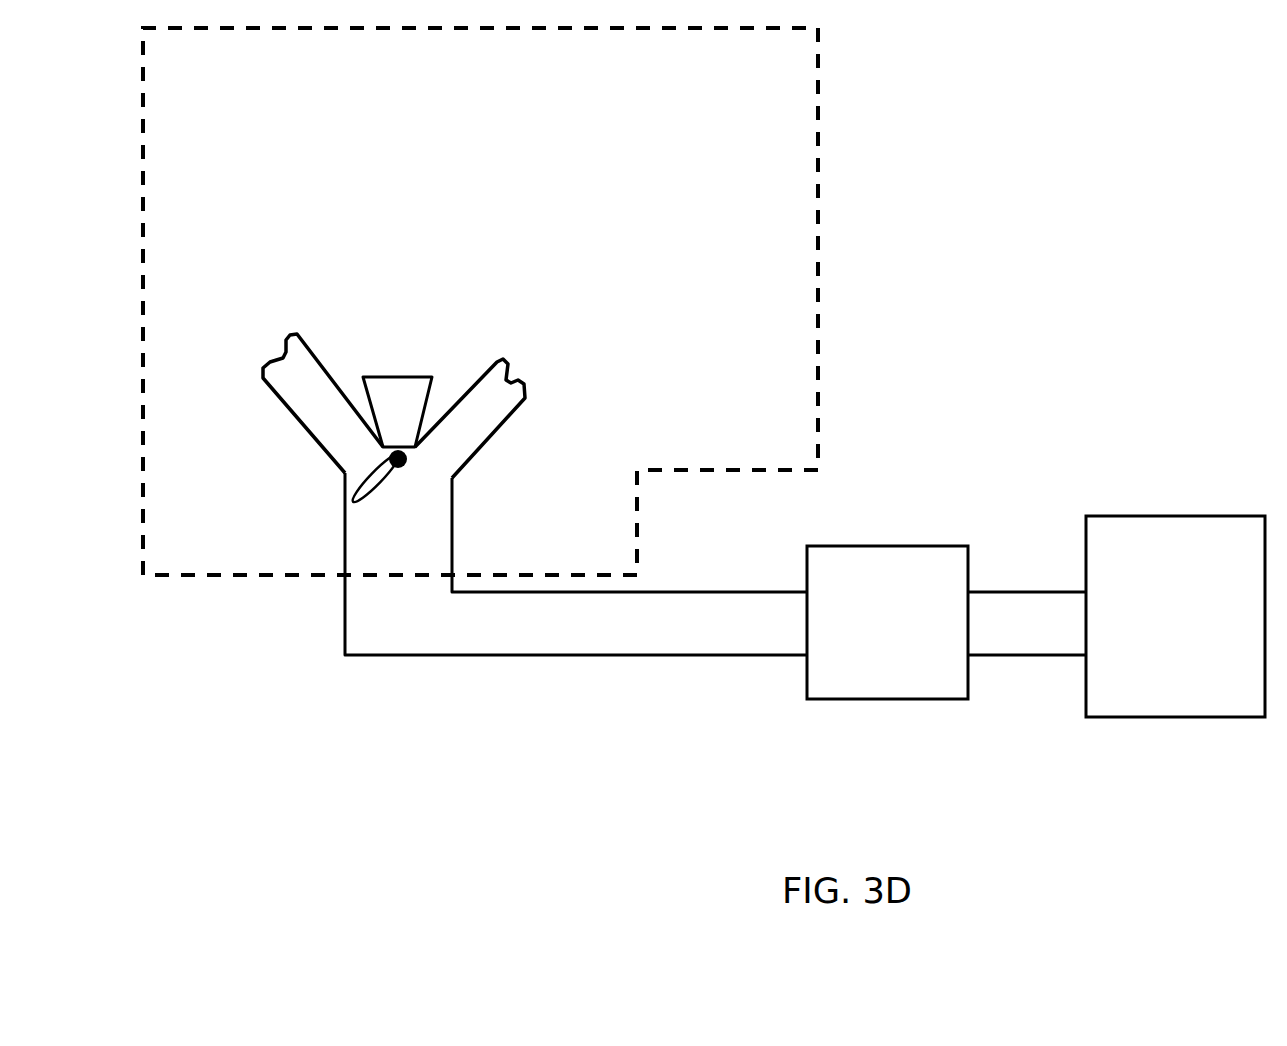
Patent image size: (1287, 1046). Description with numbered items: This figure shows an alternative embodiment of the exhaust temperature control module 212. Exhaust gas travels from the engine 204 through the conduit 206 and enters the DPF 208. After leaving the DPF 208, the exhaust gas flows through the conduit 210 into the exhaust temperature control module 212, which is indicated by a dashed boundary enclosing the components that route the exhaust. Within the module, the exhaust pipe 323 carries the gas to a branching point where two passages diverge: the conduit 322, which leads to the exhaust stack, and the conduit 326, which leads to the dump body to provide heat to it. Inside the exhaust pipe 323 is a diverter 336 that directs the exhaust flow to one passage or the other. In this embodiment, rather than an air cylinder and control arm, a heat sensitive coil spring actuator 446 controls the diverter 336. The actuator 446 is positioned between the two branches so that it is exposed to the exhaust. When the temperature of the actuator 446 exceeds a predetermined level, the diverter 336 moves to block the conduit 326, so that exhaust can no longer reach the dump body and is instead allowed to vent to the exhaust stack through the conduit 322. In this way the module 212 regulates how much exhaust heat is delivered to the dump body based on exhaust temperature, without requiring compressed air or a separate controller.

The exhaust temperature control module 212 is at (818, 133).
The conduit 322 is at (295, 394).
The conduit 326 is at (510, 398).
The heat sensitive coil spring actuator 446 is at (393, 393).
The diverter 336 is at (357, 500).
The exhaust pipe 323 is at (345, 537).
The conduit 210 is at (777, 592).
The DPF 208 is at (867, 651).
The conduit 206 is at (1018, 592).
The engine 204 is at (1155, 655).